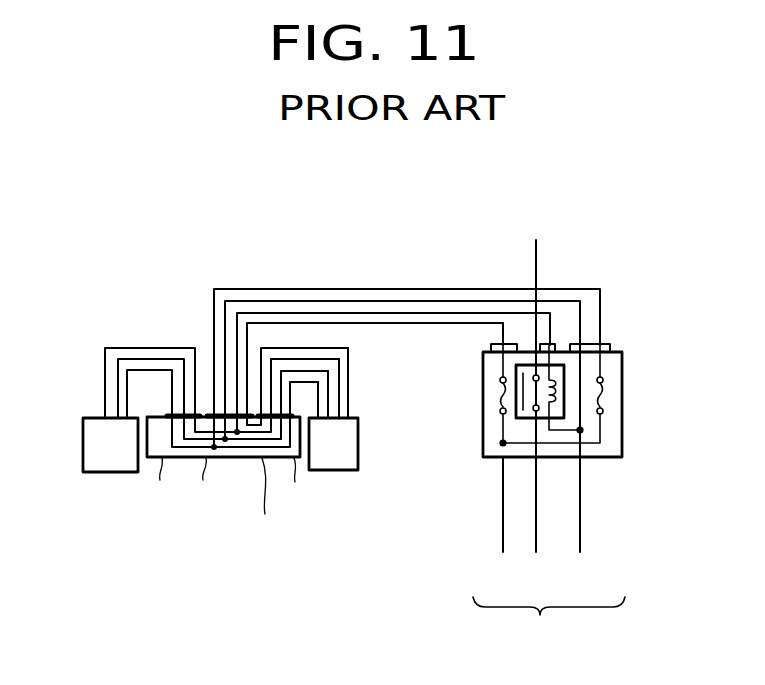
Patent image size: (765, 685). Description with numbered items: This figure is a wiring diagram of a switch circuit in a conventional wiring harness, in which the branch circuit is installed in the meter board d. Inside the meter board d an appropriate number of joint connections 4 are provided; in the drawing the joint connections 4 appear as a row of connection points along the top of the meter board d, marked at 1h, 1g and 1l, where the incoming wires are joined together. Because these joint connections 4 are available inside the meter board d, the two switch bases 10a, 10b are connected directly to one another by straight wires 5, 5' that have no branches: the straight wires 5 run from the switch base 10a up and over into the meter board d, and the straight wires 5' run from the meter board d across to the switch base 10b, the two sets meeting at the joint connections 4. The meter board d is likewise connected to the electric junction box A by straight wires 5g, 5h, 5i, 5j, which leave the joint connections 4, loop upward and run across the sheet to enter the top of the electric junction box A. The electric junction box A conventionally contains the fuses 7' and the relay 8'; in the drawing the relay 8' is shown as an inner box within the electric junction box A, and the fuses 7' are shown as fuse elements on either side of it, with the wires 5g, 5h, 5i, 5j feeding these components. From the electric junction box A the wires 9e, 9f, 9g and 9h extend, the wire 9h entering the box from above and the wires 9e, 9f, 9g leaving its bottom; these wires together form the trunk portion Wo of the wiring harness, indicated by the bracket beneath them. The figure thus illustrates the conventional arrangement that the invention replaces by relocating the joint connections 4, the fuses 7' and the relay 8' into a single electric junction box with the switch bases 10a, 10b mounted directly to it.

The joint connections 4 is at (226, 442).
The straight wires 5 is at (198, 397).
The straight wires 5' is at (358, 383).
The straight wire 5g is at (430, 324).
The straight wire 5h is at (438, 313).
The straight wire 5i is at (391, 301).
The straight wire 5j is at (348, 289).
The fuse 7' is at (641, 378).
The relay 8' is at (559, 333).
The wire 9e is at (503, 552).
The wire 9f is at (536, 552).
The wire 9g is at (580, 546).
The wire 9h is at (535, 240).
The switch base 10a is at (112, 466).
The switch base 10b is at (359, 447).
The pad 1h is at (161, 472).
The pad 1g is at (209, 486).
The pad 1l is at (295, 486).
The meter board d is at (266, 502).
The electric junction box A is at (615, 438).
The trunk portion Wo is at (549, 623).